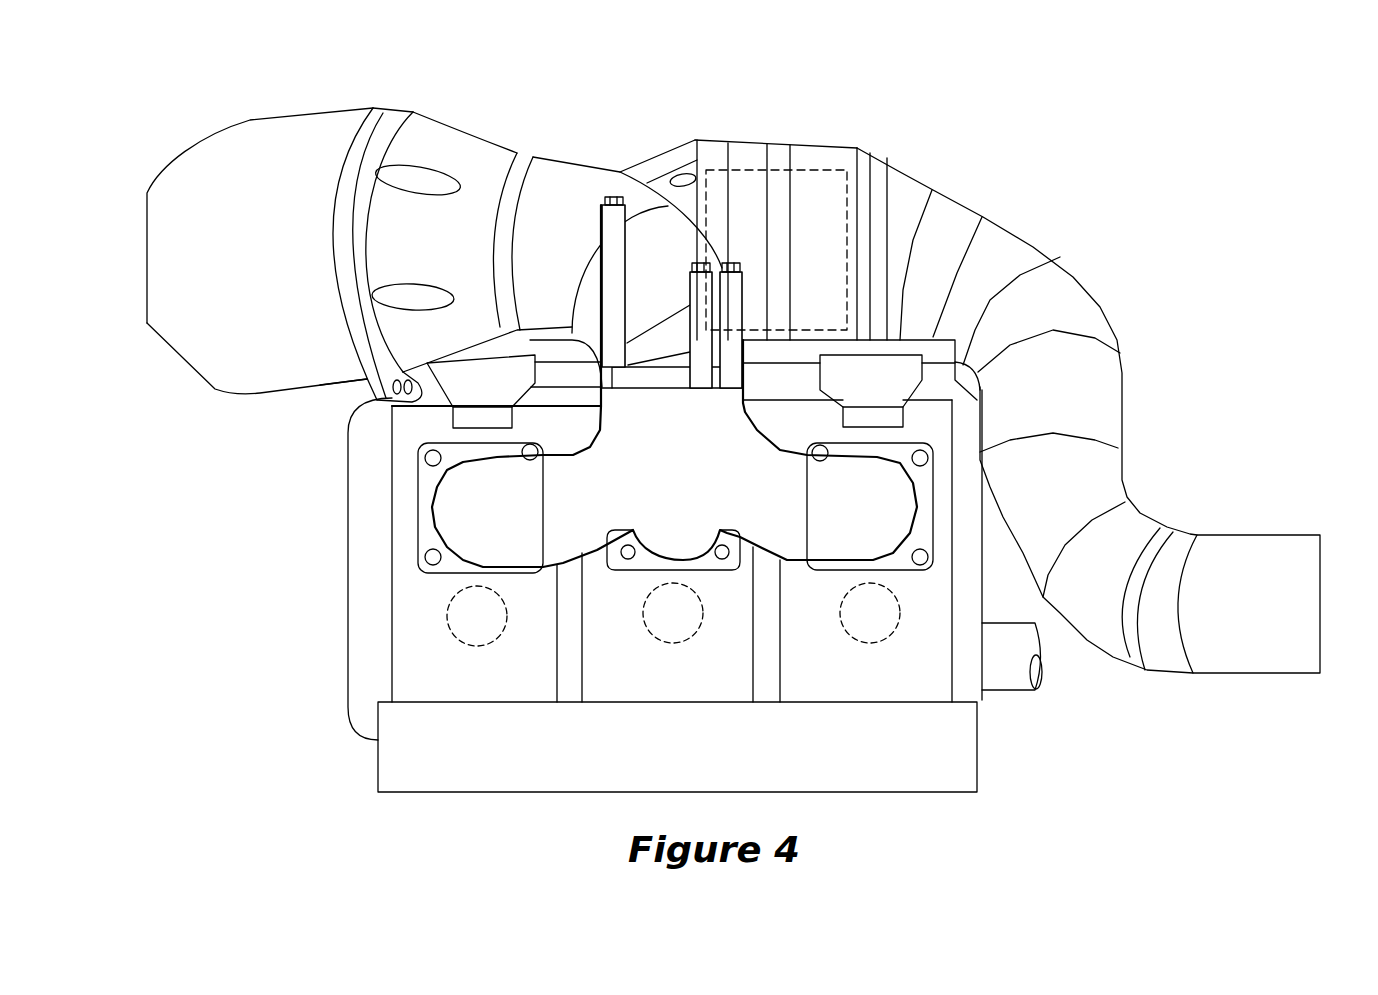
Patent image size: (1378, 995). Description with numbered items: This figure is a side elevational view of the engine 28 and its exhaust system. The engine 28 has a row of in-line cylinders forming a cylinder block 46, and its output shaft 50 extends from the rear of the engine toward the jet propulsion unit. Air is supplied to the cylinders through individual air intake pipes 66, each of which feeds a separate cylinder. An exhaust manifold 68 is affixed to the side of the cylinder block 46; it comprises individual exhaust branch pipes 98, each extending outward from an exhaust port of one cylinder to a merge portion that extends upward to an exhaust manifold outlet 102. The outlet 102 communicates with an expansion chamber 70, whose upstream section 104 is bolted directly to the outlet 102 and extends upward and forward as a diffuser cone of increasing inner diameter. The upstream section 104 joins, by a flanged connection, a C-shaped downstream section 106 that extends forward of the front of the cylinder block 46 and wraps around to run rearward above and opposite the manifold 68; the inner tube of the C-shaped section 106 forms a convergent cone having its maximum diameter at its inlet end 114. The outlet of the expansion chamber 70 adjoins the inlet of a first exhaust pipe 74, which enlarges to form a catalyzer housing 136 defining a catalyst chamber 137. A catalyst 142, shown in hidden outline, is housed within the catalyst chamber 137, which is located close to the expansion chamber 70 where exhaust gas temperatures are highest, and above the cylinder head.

The engine 28 is at (329, 594).
The cylinder block 46 is at (450, 680).
The engine output shaft 50 is at (1020, 694).
The air intake pipes 66 is at (505, 615).
The exhaust manifold 68 is at (601, 566).
The expansion chamber 70 is at (364, 84).
The first exhaust pipe 74 is at (1118, 305).
The exhaust branch pipes 98 is at (560, 553).
The exhaust manifold outlet 102 is at (643, 378).
The upstream section 104 is at (490, 140).
The C-shaped downstream section 106 is at (277, 117).
The inlet end 114 is at (350, 345).
The catalyzer housing 136 is at (759, 117).
The catalyst chamber 137 is at (717, 140).
The catalyst 142 is at (817, 170).